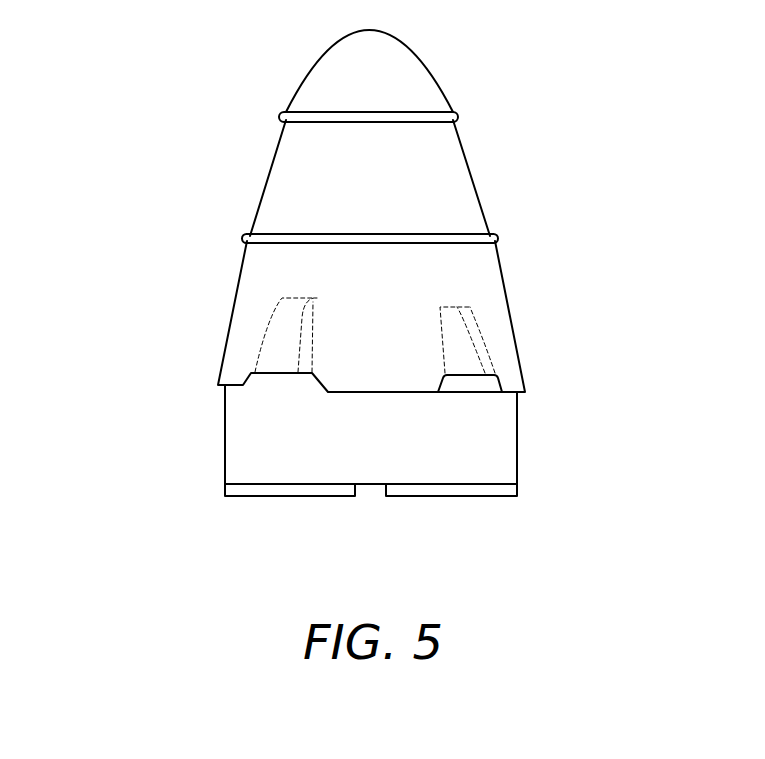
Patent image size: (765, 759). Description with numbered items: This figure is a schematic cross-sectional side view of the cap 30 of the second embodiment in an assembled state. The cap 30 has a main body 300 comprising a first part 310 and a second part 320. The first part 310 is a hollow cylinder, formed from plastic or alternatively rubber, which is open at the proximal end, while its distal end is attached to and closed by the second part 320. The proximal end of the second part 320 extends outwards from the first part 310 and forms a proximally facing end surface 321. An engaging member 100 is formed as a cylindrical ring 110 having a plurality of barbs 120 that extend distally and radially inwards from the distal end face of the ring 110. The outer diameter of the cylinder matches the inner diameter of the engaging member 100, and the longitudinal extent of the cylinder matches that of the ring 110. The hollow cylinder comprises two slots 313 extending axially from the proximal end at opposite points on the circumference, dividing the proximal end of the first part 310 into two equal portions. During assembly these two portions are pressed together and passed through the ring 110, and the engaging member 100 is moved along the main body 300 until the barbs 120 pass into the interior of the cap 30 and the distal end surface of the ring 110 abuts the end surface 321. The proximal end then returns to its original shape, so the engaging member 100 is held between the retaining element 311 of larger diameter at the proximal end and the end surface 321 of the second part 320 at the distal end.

The cap 30 is at (212, 82).
The engaging member 100 is at (118, 374).
The barbs 120 is at (268, 330).
The cylindrical ring 110 is at (248, 418).
The main body 300 is at (603, 428).
The second part 320 is at (508, 368).
The proximally facing end surface 321 is at (400, 393).
The first part 310 is at (394, 514).
The retaining element 311 is at (248, 488).
The slots 313 is at (386, 488).